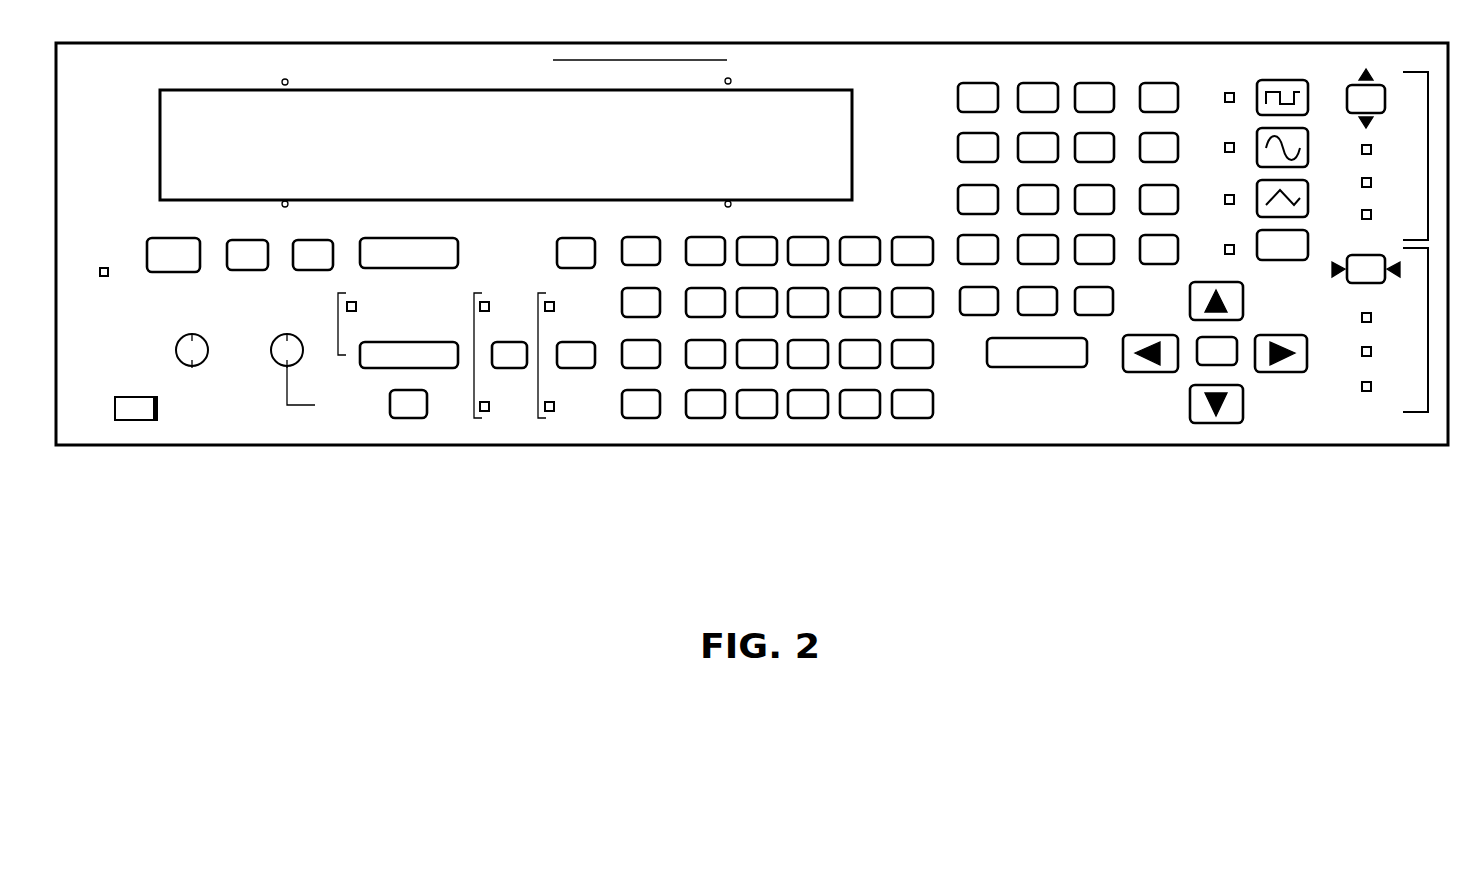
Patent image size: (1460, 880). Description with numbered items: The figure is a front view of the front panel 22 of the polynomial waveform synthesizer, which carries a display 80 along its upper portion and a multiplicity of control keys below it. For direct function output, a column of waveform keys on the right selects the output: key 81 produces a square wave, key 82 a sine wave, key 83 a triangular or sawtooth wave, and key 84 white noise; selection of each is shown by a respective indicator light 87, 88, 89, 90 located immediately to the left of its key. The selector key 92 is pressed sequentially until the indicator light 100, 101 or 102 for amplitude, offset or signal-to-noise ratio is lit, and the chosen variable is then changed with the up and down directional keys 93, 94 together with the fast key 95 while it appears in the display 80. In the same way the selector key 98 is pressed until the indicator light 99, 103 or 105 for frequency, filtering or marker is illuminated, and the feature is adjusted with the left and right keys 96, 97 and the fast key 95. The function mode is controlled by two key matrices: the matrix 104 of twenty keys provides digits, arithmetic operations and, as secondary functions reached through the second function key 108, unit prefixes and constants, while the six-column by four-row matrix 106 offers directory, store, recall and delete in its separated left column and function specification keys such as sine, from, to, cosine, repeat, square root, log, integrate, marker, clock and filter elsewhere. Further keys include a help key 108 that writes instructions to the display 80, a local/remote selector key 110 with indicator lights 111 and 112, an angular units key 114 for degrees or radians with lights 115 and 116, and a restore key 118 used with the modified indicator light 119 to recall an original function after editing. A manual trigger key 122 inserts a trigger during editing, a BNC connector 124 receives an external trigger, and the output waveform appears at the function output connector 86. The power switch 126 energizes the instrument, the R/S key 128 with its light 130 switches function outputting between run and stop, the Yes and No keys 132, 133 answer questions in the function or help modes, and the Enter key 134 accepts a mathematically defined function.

The front panel 22 is at (608, 43).
The display 80 is at (260, 90).
The square wave key 81 is at (1288, 80).
The sine wave key 82 is at (1308, 146).
The triangular wave key 83 is at (1308, 198).
The noise key 84 is at (1308, 247).
The connector 86 is at (205, 361).
The indicator light 87 is at (1229, 93).
The indicator light 88 is at (1229, 143).
The indicator light 89 is at (1229, 195).
The indicator light 90 is at (1229, 245).
The selector key 92 is at (1372, 85).
The up directional key 93 is at (1243, 300).
The down directional key 94 is at (1243, 408).
The fast key 95 is at (1200, 363).
The left directional key 96 is at (1135, 335).
The right directional key 97 is at (1285, 335).
The selector key 98 is at (1383, 283).
The indicator light 99 is at (1368, 313).
The indicator light 100 is at (1370, 149).
The indicator light 101 is at (1371, 182).
The indicator light 102 is at (1371, 214).
The indicator light 103 is at (1361, 351).
The key matrix 104 is at (976, 332).
The indicator light 105 is at (1361, 386).
The key matrix 106 is at (674, 414).
The second function / help key 108 is at (594, 238).
The local/remote selector key 110 is at (577, 342).
The indicator light 111 is at (550, 301).
The indicator light 112 is at (550, 411).
The angular units key 114 is at (512, 342).
The indicator light 115 is at (485, 301).
The indicator light 116 is at (485, 411).
The restore key 118 is at (420, 368).
The modified indicator light 119 is at (352, 302).
The manual trigger key 122 is at (407, 418).
The BNC connector 124 is at (271, 352).
The power switch 126 is at (148, 420).
The R/S key 128 is at (190, 238).
The indicator light 130 is at (116, 251).
The Yes key 132 is at (240, 240).
The No key 133 is at (312, 240).
The Enter key 134 is at (406, 238).